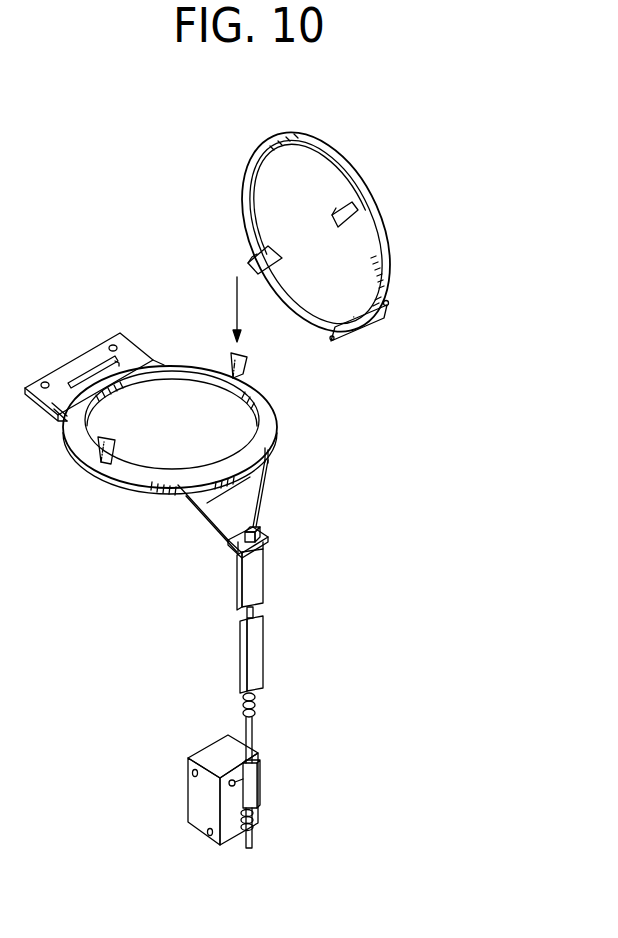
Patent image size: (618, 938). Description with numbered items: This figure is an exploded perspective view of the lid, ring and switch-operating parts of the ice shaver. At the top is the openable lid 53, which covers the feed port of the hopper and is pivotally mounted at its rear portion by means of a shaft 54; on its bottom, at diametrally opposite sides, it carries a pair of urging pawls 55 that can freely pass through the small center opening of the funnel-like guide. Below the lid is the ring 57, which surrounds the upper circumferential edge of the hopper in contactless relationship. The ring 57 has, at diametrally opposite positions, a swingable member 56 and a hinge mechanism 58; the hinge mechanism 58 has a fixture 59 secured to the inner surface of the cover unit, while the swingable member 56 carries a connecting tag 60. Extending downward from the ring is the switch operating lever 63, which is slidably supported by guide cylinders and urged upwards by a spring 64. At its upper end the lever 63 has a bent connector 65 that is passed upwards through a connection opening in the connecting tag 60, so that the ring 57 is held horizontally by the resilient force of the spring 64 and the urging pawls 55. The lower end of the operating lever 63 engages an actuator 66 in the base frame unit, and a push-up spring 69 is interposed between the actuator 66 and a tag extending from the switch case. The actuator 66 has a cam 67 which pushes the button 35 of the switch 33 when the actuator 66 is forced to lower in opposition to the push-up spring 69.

The switch 33 is at (200, 788).
The button 35 is at (232, 787).
The openable lid 53 is at (320, 179).
The shaft 54 is at (390, 303).
The urging pawls 55 is at (253, 260).
The swingable member 56 is at (268, 453).
The ring 57 is at (87, 447).
The hinge mechanism 58 is at (60, 414).
The fixture 59 is at (73, 367).
The connecting tag 60 is at (245, 500).
The switch operating lever 63 is at (257, 638).
The spring 64 is at (243, 705).
The bent connector 65 is at (263, 532).
The actuator 66 is at (253, 777).
The cam 67 is at (242, 803).
The push-up spring 69 is at (250, 817).